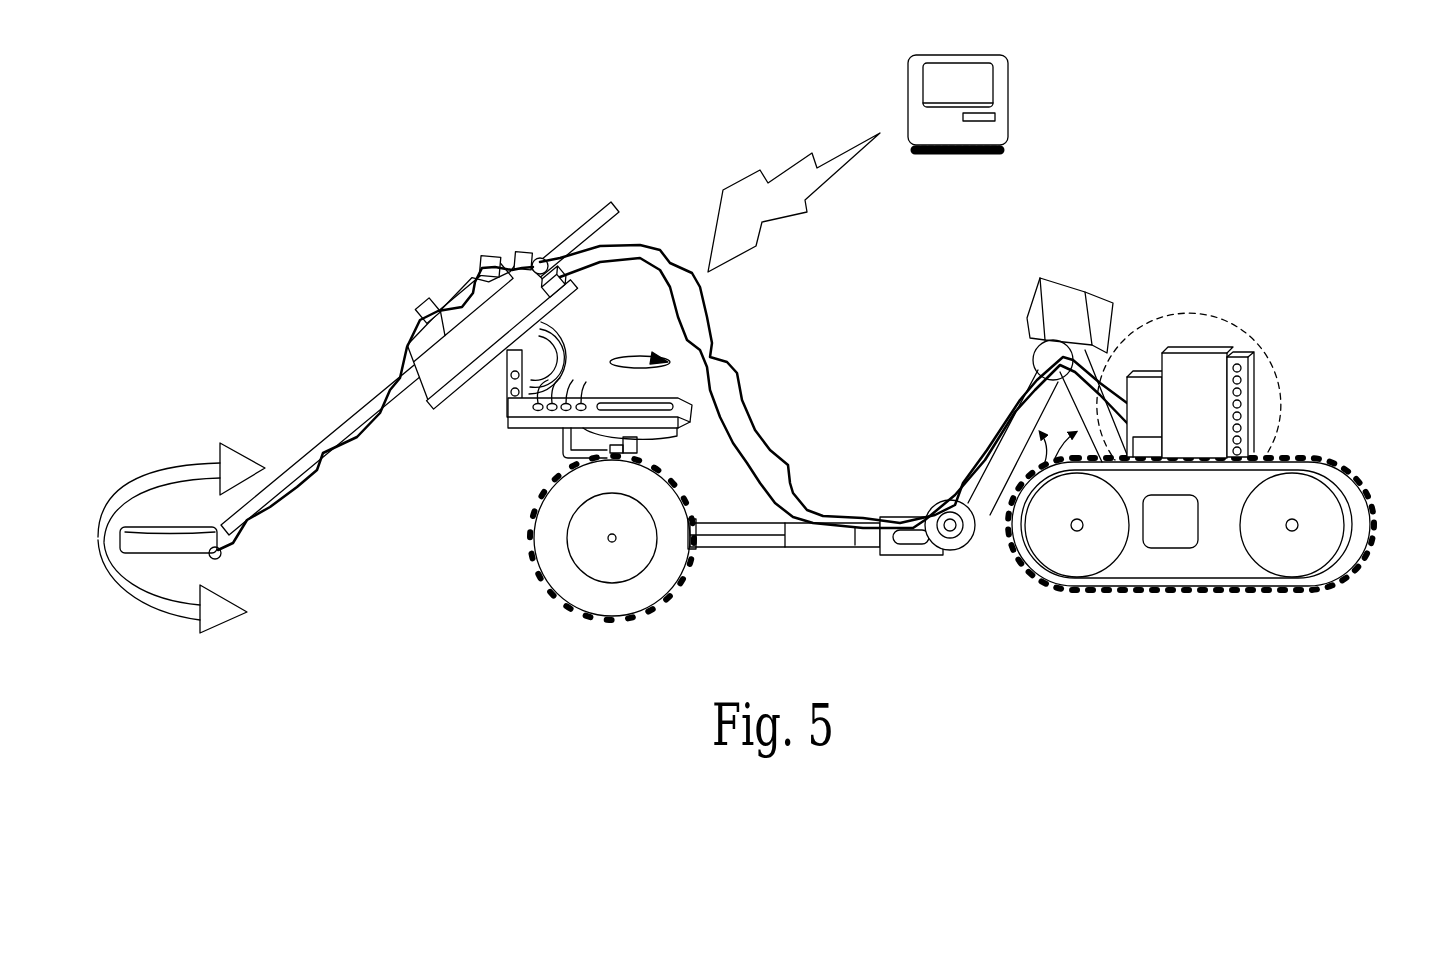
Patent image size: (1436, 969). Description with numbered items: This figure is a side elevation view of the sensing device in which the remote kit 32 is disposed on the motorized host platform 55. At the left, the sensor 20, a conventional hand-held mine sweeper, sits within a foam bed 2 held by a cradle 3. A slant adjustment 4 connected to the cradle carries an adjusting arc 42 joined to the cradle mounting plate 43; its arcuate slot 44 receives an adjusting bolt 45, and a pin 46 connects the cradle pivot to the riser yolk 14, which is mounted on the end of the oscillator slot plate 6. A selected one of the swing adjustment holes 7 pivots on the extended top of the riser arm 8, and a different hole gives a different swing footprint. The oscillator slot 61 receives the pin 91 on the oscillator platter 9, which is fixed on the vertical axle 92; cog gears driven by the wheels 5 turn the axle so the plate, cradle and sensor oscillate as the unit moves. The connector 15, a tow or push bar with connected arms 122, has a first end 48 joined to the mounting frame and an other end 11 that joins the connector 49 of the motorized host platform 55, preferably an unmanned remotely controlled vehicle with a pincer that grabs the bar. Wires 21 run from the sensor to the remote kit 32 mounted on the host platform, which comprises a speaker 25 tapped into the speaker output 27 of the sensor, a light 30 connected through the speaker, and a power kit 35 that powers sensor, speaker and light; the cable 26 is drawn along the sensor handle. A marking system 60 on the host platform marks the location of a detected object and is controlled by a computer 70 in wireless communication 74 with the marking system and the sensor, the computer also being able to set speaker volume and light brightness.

The foam bed 2 is at (572, 255).
The cradle 3 is at (478, 268).
The slant adjustment 4 is at (578, 293).
The wheels 5 is at (535, 563).
The oscillator slot plate 6 is at (533, 418).
The swing adjustment holes 7 is at (556, 400).
The riser arm 8 is at (545, 470).
The oscillator platter 9 is at (560, 430).
The other end of the connector 11 is at (898, 555).
The riser yolk 14 is at (507, 414).
The connector 15 is at (835, 545).
The sensor 20 is at (322, 420).
The wires 21 is at (731, 365).
The speaker 25 is at (1208, 350).
The cable 26 is at (325, 470).
The speaker output 27 is at (540, 258).
The light 30 is at (1243, 357).
The remote kit 32 is at (1196, 320).
The power kit 35 is at (1143, 377).
The adjusting arc 42 is at (577, 323).
The cradle mounting plate 43 is at (578, 280).
The arcuate slot 44 is at (570, 345).
The adjusting bolt 45 is at (507, 410).
The pin 46 is at (507, 400).
The first end of the connector 48 is at (730, 547).
The connector 49 is at (1048, 396).
The motorized host platform 55 is at (1320, 453).
The marking system 60 is at (1167, 447).
The oscillator slot 61 is at (635, 403).
The computer 70 is at (1008, 105).
The wireless communication 74 is at (752, 221).
The pin 91 is at (652, 358).
The vertical axle 92 is at (633, 438).
The arms 122 is at (728, 523).